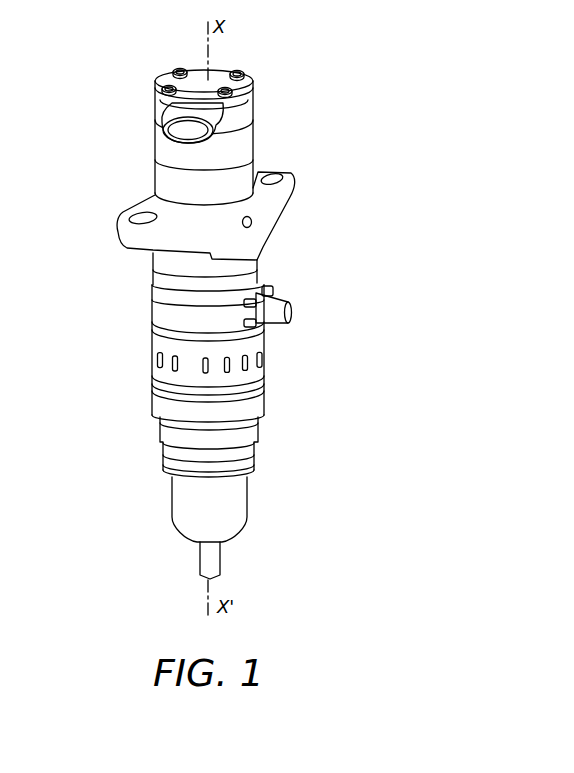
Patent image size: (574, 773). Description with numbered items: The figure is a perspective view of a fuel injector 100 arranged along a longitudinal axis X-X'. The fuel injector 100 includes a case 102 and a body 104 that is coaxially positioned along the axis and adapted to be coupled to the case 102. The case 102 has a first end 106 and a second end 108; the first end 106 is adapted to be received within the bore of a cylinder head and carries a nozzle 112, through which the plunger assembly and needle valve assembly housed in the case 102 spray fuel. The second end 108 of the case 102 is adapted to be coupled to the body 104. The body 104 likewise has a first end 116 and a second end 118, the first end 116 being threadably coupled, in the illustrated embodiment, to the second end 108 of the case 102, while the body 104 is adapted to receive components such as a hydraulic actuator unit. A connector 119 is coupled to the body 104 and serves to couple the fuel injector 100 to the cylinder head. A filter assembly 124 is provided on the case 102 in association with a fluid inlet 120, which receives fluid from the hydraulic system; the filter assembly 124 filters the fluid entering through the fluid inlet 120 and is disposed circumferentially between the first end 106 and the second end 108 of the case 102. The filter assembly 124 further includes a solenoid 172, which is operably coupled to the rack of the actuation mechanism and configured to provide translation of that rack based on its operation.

The fuel injector 100 is at (393, 64).
The second end 118 is at (270, 93).
The body 104 is at (143, 168).
The first end 116 is at (275, 243).
The connector 119 is at (283, 197).
The second end 108 is at (286, 273).
The solenoid 172 is at (295, 302).
The fluid inlet 120 is at (276, 343).
The filter assembly 124 is at (158, 355).
The case 102 is at (147, 443).
The first end 106 is at (241, 555).
The nozzle 112 is at (200, 553).